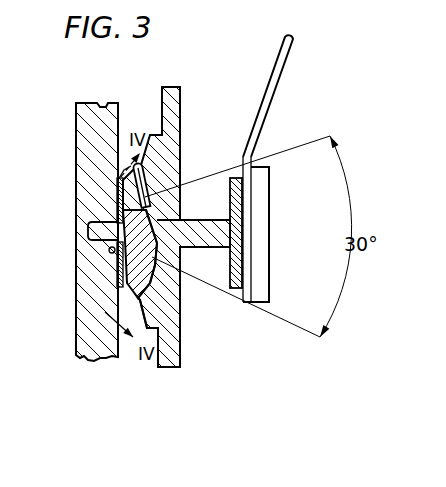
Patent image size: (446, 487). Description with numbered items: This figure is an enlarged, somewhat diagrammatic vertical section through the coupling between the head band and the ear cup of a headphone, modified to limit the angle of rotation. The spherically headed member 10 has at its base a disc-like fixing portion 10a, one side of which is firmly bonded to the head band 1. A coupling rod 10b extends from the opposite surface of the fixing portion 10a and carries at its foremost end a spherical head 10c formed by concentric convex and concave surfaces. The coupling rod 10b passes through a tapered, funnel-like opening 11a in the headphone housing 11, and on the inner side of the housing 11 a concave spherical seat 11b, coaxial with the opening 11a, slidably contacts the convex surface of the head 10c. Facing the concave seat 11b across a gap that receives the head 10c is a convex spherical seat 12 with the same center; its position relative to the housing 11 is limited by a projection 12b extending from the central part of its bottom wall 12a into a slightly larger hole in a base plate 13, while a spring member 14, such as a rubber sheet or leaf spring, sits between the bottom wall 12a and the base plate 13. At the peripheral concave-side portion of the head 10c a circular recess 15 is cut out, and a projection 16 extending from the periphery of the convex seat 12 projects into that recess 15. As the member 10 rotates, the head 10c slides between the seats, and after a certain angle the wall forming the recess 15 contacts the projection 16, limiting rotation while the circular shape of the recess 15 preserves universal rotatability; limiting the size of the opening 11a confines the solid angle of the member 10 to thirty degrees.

The head band 1 is at (283, 63).
The spherically headed member 10 is at (237, 229).
The fixing portion 10a is at (233, 193).
The coupling rod 10b is at (243, 272).
The spherical head 10c is at (230, 254).
The headphone housing 11 is at (180, 352).
The opening 11a is at (160, 192).
The concave spherical seat 11b is at (155, 297).
The convex spherical seat 12 is at (115, 263).
The bottom wall 12a is at (109, 250).
The projection 12b is at (88, 223).
The base plate 13 is at (82, 329).
The spring member 14 is at (113, 202).
The circular recess 15 is at (160, 200).
The projection 16 is at (110, 172).